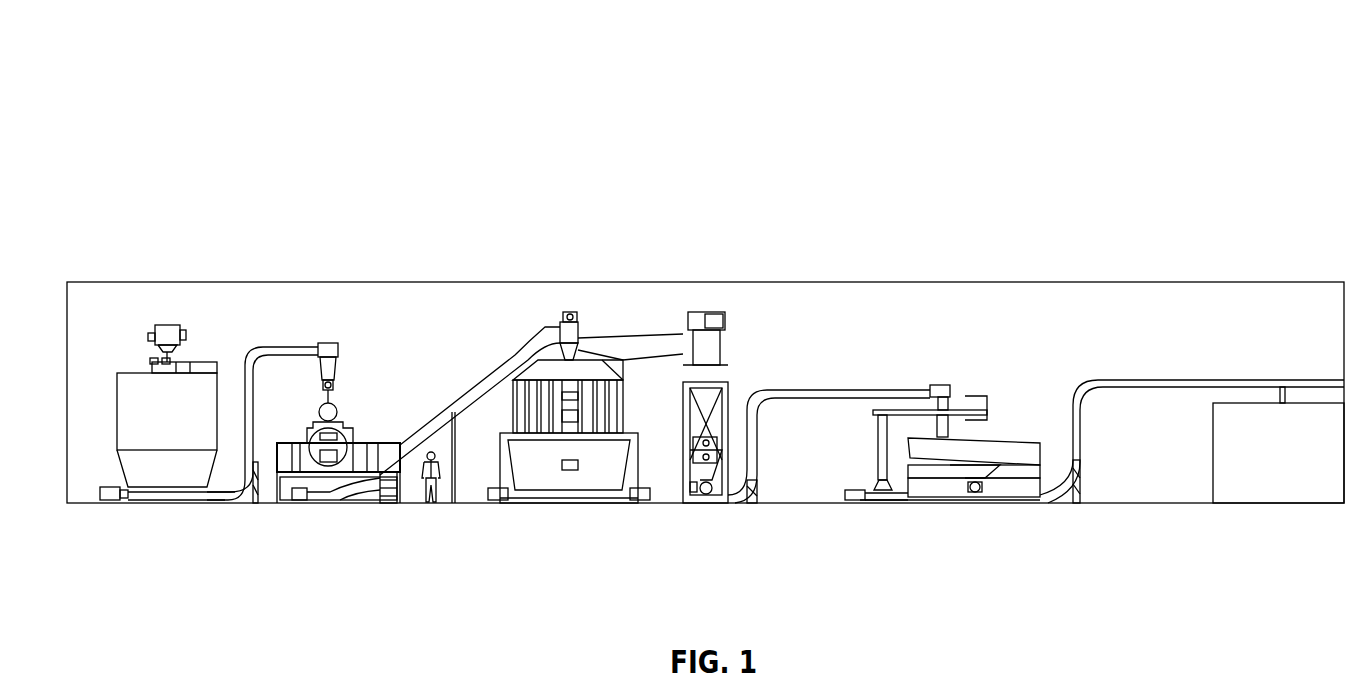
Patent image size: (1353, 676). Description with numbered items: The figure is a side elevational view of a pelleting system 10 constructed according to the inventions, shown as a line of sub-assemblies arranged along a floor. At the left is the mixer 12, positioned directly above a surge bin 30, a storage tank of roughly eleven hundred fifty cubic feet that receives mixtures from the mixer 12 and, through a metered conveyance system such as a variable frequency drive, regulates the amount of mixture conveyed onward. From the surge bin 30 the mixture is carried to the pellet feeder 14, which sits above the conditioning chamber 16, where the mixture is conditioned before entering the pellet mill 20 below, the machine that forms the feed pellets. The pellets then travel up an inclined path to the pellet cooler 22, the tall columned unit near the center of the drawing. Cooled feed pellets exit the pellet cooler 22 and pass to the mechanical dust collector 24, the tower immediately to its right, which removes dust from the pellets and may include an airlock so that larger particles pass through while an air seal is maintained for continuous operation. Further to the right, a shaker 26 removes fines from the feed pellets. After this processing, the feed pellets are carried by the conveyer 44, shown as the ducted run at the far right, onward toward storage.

The pelleting system 10 is at (905, 93).
The mixer 12 is at (153, 335).
The pellet feeder 14 is at (337, 343).
The conditioning chamber 16 is at (340, 403).
The pellet mill 20 is at (302, 463).
The pellet cooler 22 is at (577, 390).
The mechanical dust collector 24 is at (718, 390).
The shaker 26 is at (973, 450).
The surge bin 30 is at (182, 388).
The conveyer 44 is at (1248, 380).